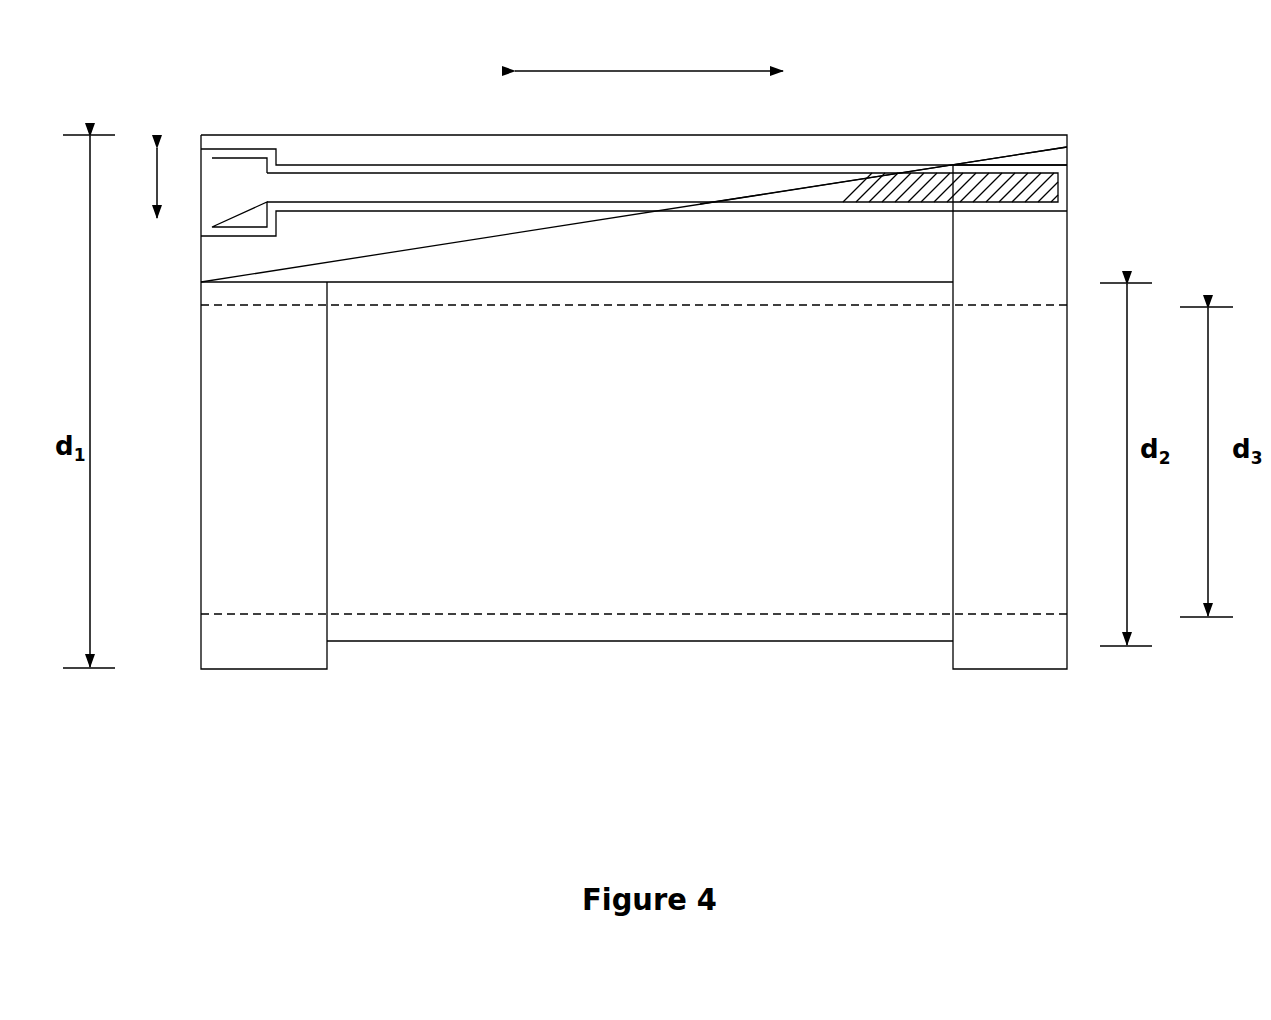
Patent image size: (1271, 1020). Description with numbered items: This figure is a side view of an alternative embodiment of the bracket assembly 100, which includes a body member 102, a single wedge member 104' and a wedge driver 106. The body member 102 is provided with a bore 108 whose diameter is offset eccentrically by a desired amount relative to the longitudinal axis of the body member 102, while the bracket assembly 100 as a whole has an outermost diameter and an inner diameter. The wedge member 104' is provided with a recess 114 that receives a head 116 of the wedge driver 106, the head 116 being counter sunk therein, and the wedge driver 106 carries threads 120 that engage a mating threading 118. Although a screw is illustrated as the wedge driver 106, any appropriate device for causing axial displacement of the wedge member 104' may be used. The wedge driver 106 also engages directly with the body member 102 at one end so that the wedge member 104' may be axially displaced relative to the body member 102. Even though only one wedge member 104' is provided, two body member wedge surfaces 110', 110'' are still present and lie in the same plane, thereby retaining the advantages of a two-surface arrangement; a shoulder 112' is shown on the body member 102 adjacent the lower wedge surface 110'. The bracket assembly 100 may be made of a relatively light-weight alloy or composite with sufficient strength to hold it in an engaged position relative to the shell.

The bracket assembly 100 is at (823, 669).
The body member 102 is at (423, 614).
The wedge member 104' is at (634, 99).
The wedge driver 106 is at (402, 187).
The bore 108 is at (623, 577).
The body member wedge surface 110' is at (587, 214).
The body member wedge surface 110'' is at (920, 132).
The shoulder 112' is at (214, 321).
The recess 114 is at (234, 155).
The head 116 is at (231, 170).
The threading 118 is at (1049, 156).
The threads 120 is at (1026, 193).